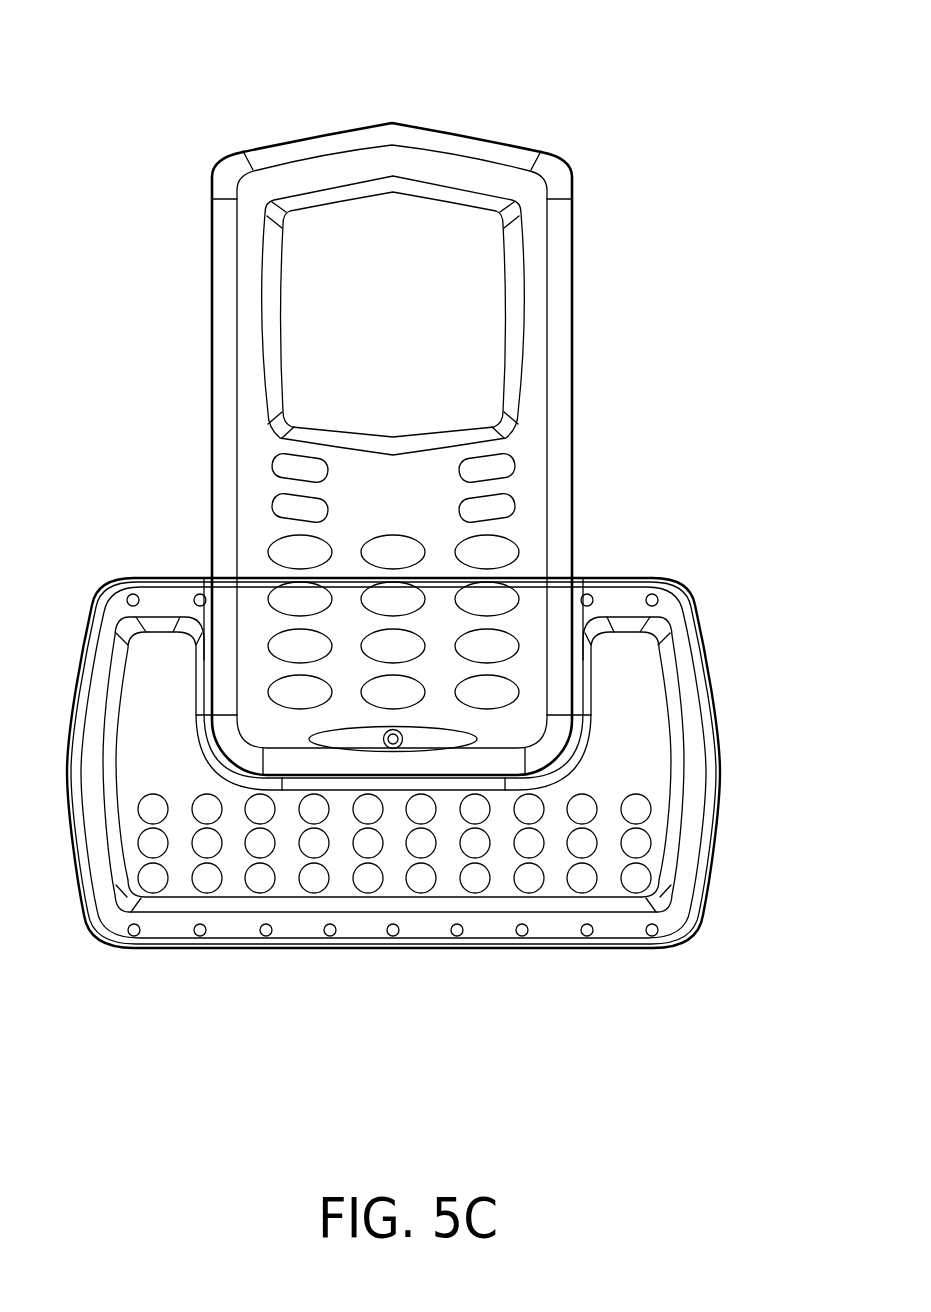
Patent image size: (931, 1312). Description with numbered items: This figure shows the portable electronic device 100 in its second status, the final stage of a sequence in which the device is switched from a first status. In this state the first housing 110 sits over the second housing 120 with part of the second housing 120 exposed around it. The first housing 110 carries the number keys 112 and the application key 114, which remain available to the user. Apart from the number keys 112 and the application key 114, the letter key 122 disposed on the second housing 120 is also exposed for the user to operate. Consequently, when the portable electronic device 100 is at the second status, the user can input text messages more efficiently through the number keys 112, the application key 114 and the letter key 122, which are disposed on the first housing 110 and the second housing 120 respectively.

The portable electronic device 100 is at (657, 52).
The first housing 110 is at (520, 197).
The number keys 112 is at (291, 598).
The application key 114 is at (291, 509).
The second housing 120 is at (693, 782).
The letter key 122 is at (260, 878).